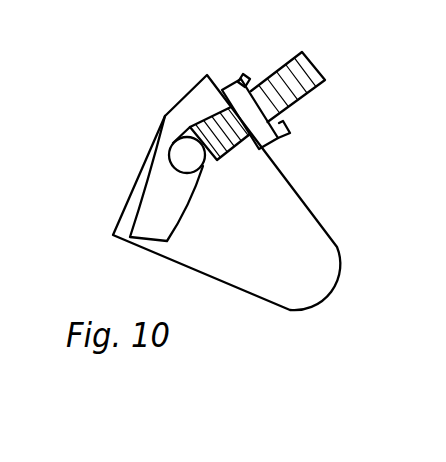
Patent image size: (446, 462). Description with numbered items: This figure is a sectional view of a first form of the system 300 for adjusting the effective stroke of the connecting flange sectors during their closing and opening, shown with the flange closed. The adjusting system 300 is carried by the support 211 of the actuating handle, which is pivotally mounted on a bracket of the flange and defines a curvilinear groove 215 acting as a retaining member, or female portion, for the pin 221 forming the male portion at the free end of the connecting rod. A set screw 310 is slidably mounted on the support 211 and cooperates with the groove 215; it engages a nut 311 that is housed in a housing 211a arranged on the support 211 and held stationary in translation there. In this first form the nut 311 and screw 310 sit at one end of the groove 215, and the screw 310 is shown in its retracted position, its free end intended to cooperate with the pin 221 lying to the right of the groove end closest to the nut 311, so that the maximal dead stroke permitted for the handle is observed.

The support 211 is at (205, 255).
The housing 211a is at (240, 72).
The curvilinear groove 215 is at (148, 216).
The male portion 221 is at (180, 147).
The adjusting system 300 is at (291, 93).
The set screw 310 is at (293, 81).
The nut 311 is at (245, 103).